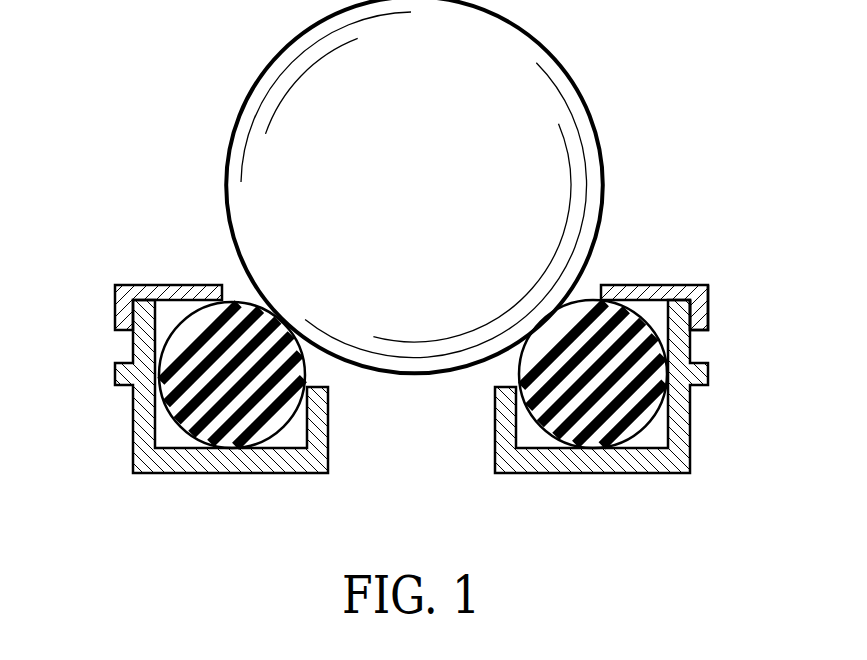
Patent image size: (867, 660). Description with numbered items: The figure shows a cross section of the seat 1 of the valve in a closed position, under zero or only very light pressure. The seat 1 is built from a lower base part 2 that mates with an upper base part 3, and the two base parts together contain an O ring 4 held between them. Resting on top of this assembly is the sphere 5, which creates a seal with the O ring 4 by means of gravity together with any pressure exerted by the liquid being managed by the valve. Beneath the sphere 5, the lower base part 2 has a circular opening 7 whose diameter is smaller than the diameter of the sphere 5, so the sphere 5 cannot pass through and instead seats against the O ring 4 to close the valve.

The seat 1 is at (633, 270).
The lower base part 2 is at (703, 435).
The upper base part 3 is at (725, 280).
The O ring 4 is at (157, 436).
The sphere 5 is at (216, 160).
The circular opening 7 is at (418, 469).